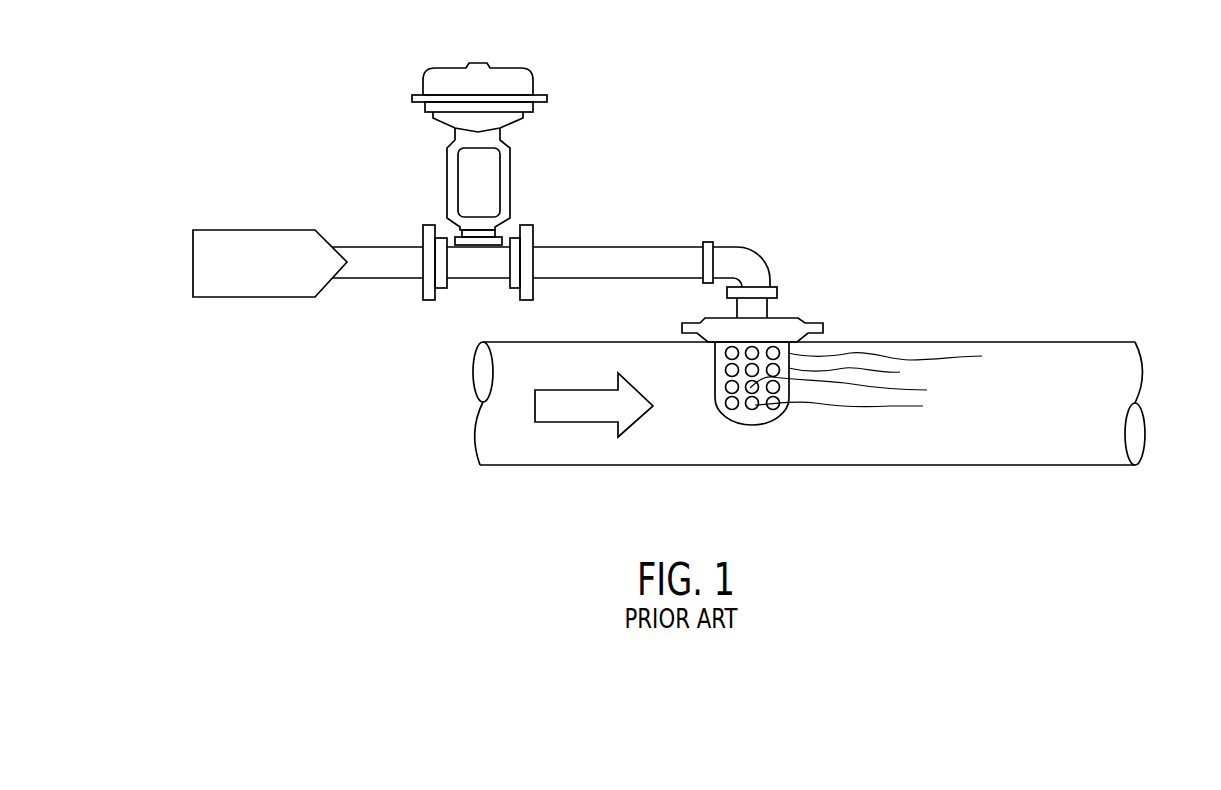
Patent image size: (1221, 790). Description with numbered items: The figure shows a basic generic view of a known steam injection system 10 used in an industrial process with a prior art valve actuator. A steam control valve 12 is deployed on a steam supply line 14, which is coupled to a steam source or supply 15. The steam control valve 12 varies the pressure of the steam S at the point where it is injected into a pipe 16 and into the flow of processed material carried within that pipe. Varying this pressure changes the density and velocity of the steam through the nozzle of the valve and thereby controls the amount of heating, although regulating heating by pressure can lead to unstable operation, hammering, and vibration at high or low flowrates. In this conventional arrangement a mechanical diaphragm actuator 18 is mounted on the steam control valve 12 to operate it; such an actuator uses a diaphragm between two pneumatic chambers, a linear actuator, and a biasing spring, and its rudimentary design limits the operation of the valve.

The system 10 is at (812, 106).
The steam control valve 12 is at (512, 188).
The steam supply line 14 is at (382, 247).
The steam source 15 is at (267, 230).
The pipe 16 is at (1033, 342).
The mechanical diaphragm actuator 18 is at (533, 71).
The steam S is at (907, 361).